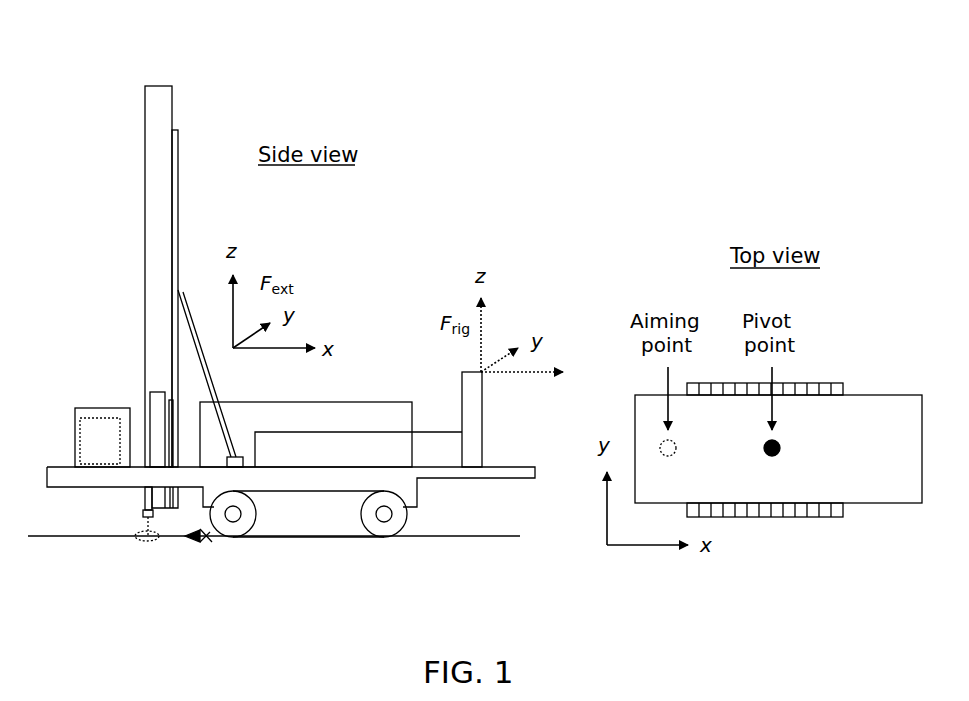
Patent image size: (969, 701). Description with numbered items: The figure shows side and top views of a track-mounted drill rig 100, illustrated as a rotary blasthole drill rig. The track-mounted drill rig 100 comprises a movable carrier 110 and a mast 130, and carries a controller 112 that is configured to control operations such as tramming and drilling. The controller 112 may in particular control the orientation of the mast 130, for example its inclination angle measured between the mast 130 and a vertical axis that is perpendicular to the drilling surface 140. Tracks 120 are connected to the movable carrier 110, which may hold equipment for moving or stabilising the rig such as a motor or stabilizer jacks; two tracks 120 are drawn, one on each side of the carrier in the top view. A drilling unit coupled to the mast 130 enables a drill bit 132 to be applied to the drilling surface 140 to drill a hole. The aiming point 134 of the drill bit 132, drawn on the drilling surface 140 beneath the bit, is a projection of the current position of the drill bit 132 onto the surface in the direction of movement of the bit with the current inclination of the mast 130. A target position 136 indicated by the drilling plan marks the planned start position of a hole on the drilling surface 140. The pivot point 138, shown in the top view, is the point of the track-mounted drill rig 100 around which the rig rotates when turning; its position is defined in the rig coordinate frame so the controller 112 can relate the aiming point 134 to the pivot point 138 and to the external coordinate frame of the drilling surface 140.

The track-mounted drill rig 100 is at (390, 261).
The movable carrier 110 is at (524, 467).
The controller 112 is at (75, 440).
The tracks 120 is at (408, 519).
The mast 130 is at (158, 86).
The drill bit 132 is at (145, 512).
The aiming point 134 is at (148, 543).
The target position 136 is at (192, 543).
The pivot point 138 is at (780, 450).
The drilling surface 140 is at (465, 542).